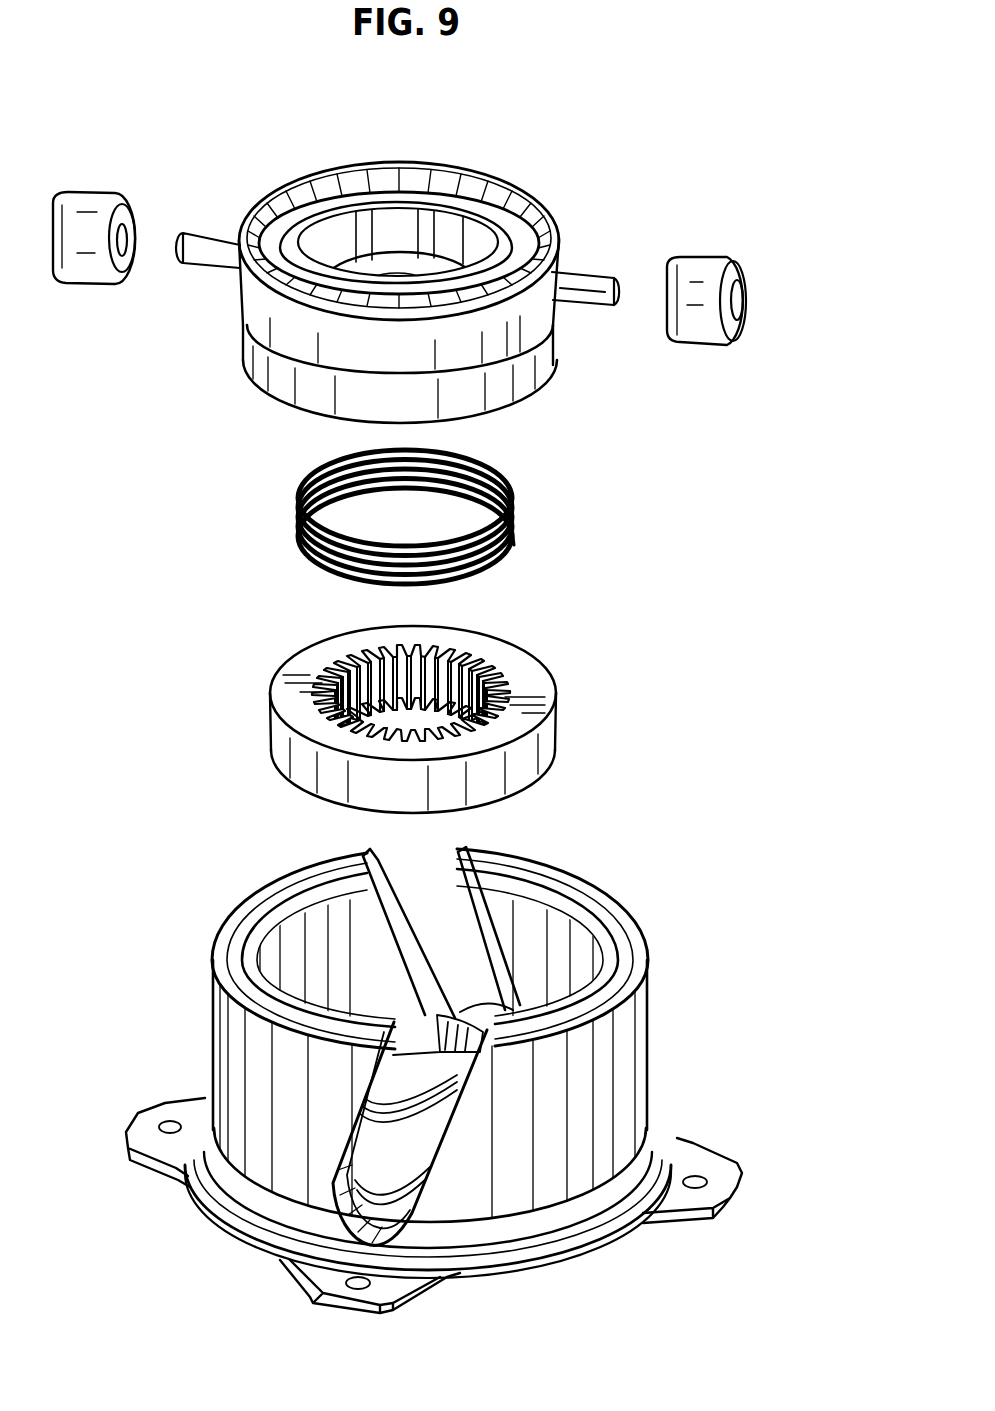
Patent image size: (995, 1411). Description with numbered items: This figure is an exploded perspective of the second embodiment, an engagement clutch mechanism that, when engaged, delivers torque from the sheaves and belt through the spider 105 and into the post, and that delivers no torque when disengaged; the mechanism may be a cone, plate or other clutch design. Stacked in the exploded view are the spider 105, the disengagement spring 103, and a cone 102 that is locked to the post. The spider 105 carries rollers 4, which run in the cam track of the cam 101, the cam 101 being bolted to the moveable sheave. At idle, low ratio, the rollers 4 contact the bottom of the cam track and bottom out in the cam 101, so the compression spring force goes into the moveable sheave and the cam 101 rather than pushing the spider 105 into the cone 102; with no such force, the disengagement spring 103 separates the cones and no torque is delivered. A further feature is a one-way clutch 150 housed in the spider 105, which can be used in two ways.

The rollers 4 is at (693, 348).
The cam 101 is at (632, 1018).
The cone 102 is at (552, 726).
The disengagement spring 103 is at (514, 518).
The spider 105 is at (397, 275).
The one-way clutch 150 is at (387, 212).